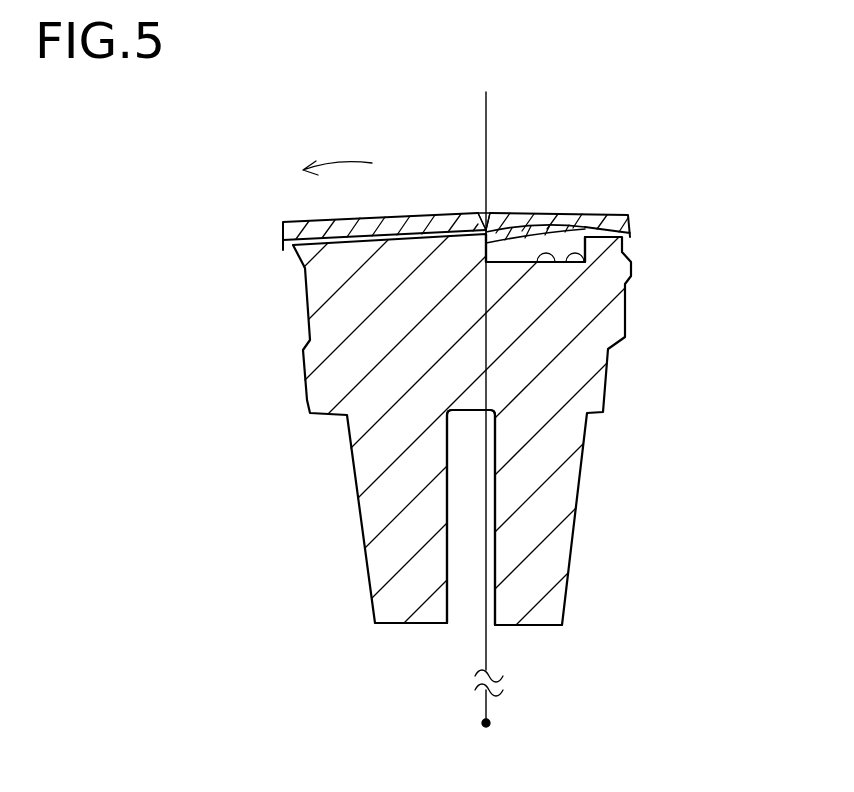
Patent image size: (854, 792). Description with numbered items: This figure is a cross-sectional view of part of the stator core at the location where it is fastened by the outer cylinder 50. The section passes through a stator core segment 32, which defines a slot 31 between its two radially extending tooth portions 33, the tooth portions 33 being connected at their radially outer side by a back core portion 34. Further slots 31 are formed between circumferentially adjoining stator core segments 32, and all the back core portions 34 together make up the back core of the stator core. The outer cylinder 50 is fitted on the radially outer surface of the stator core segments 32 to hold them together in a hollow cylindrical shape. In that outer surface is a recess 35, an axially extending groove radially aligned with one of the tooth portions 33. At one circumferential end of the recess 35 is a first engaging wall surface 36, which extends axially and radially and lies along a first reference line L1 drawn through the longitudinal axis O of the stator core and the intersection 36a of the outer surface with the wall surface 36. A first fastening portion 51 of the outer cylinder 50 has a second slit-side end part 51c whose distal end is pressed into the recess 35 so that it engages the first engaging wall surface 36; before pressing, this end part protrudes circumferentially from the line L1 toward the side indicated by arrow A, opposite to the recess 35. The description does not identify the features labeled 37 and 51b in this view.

The slot 31 is at (462, 563).
The stator core segment 32 is at (291, 383).
The tooth portion 33 is at (388, 560).
The back core portion 34 is at (380, 280).
The recess 35 is at (572, 265).
The first engaging wall surface 36 is at (575, 262).
The intersection 36a is at (495, 215).
The recess 37 is at (575, 268).
The outer cylinder 50 is at (320, 222).
The first fastening portion 51 is at (563, 217).
The tip portion 51b is at (473, 215).
The second slit-side end part 51c is at (503, 193).
The first reference line L1 is at (485, 391).
The longitudinal axis O is at (489, 744).
The arrow A is at (337, 151).